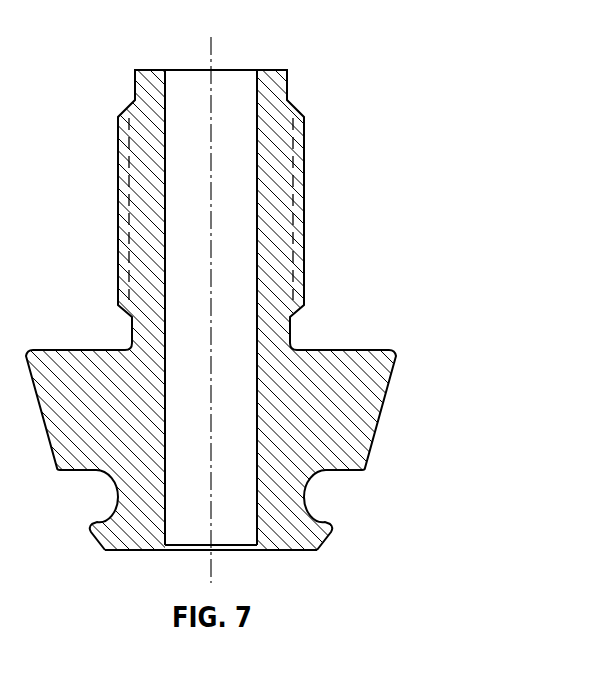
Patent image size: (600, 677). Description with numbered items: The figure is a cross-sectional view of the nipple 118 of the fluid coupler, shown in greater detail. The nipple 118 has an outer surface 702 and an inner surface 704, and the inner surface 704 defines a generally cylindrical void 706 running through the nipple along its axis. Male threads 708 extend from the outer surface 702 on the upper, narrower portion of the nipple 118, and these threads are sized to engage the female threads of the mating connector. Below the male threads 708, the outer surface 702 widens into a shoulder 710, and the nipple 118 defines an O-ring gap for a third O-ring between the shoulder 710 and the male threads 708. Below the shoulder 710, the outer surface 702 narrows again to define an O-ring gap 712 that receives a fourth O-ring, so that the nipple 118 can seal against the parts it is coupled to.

The nipple 118 is at (300, 338).
The outer surface 702 is at (287, 83).
The inner surface 704 is at (257, 105).
The cylindrical void 706 is at (182, 82).
The male threads 708 is at (295, 162).
The shoulder 710 is at (370, 378).
The O-ring gap 712 is at (338, 503).